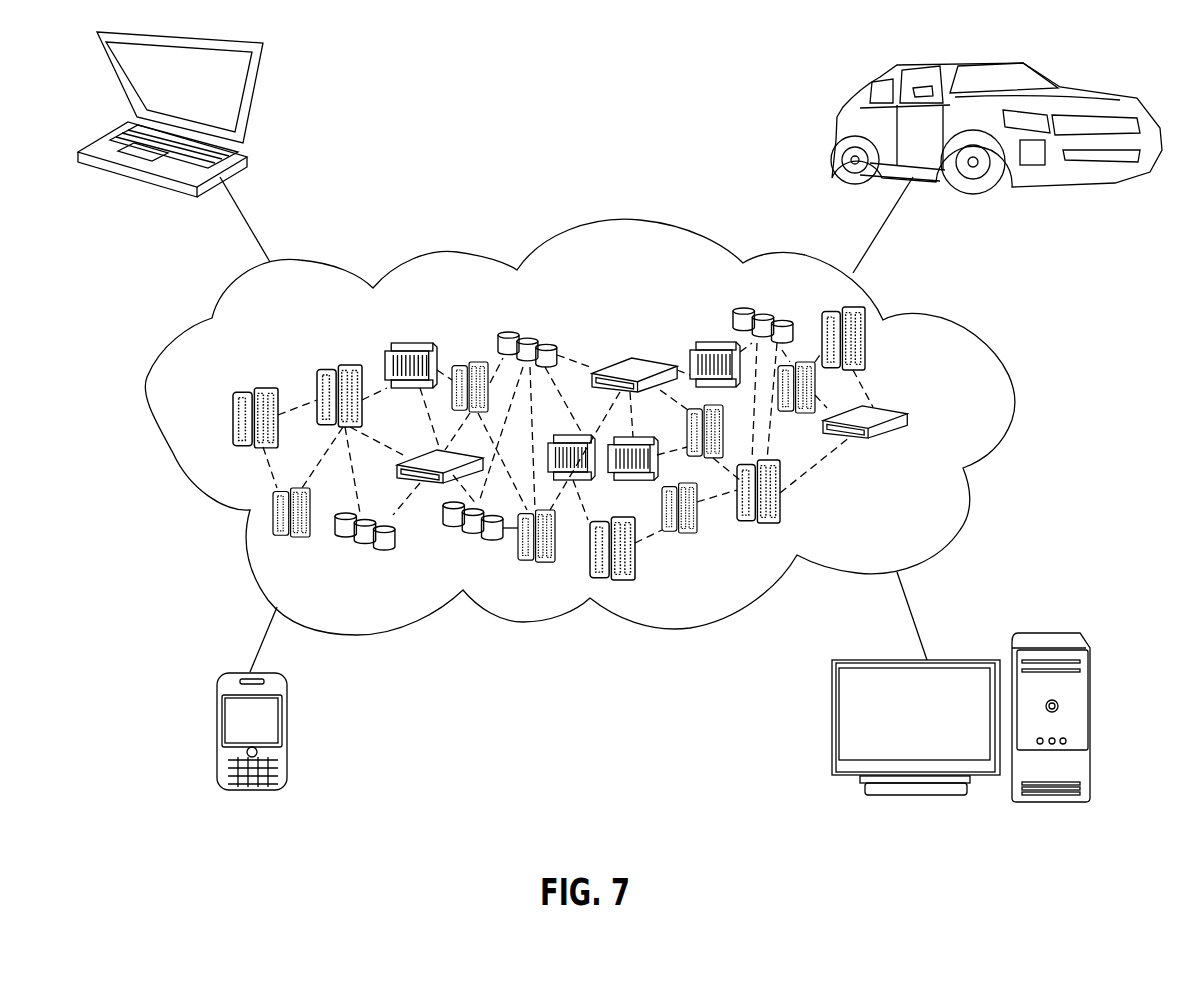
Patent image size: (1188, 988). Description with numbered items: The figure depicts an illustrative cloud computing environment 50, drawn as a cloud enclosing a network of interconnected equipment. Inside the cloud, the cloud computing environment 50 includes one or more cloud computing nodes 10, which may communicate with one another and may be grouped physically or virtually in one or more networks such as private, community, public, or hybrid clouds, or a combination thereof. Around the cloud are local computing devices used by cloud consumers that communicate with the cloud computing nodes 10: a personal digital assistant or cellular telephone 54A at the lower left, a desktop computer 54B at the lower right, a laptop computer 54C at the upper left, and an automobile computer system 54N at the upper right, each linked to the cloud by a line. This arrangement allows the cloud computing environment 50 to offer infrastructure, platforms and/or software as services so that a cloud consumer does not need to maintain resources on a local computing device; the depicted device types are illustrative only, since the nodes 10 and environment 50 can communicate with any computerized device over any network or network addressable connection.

The cloud computing nodes 10 is at (948, 422).
The cloud computing environment 50 is at (977, 333).
The personal digital assistant (PDA) or cellular telephone 54A is at (217, 737).
The desktop computer 54B is at (1053, 633).
The laptop computer 54C is at (257, 100).
The automobile computer system 54N is at (845, 110).